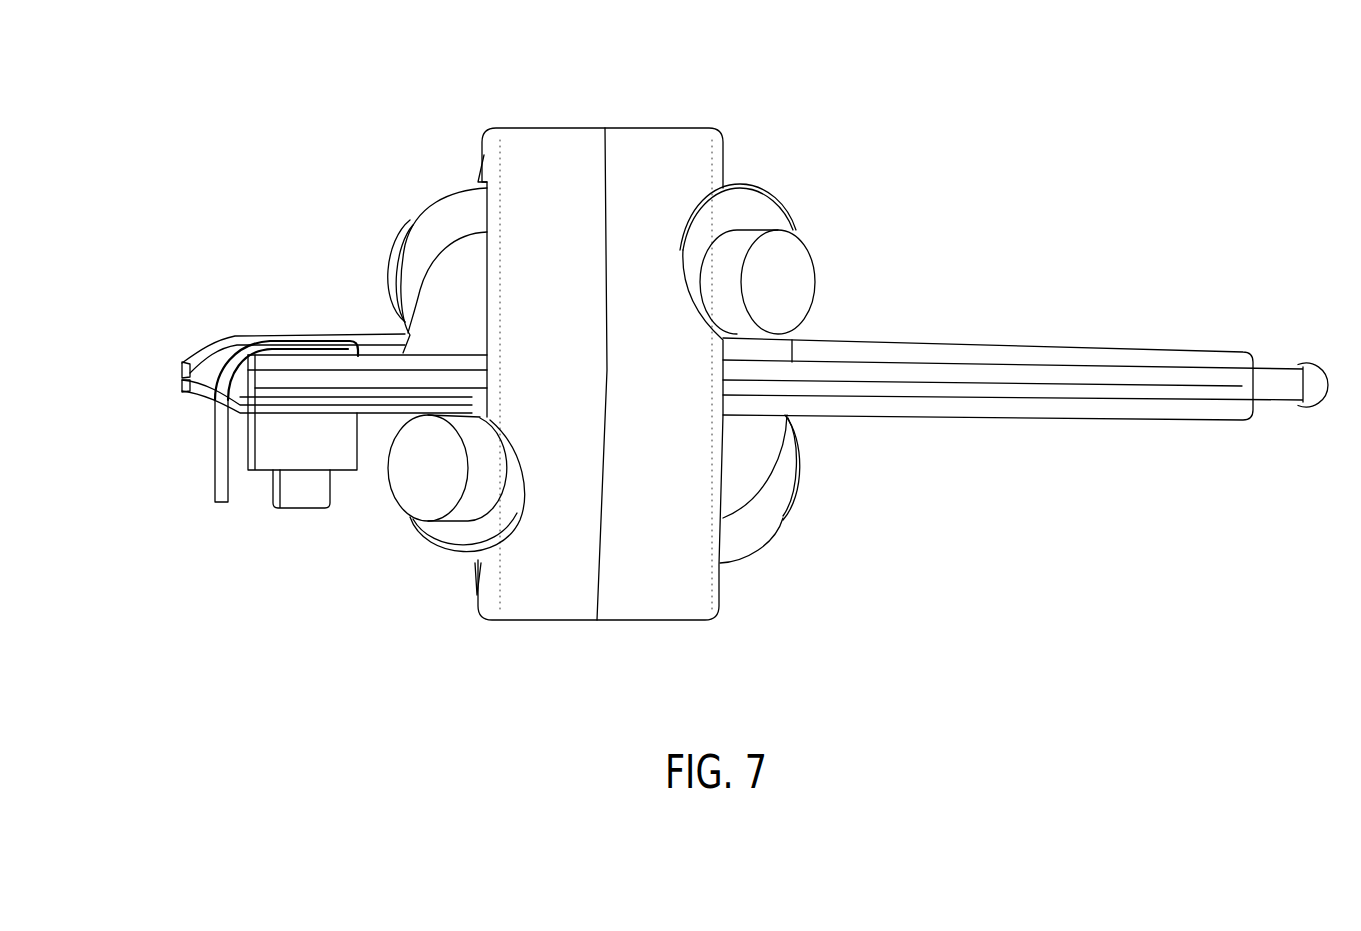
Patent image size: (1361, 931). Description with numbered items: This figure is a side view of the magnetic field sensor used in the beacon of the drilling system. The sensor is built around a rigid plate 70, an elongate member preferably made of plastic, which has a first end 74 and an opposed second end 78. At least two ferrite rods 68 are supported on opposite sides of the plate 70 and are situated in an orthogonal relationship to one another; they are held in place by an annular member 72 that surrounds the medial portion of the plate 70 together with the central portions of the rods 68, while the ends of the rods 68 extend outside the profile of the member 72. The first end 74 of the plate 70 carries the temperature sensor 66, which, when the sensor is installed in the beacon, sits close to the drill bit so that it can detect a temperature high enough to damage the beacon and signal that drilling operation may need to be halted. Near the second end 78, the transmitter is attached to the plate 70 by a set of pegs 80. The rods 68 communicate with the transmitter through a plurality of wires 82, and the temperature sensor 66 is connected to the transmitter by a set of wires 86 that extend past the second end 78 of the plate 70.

The temperature sensor 66 is at (1315, 397).
The ferrite rods 68 is at (748, 218).
The rigid plate 70 is at (913, 352).
The annular member 72 is at (640, 143).
The first end 74 is at (1257, 387).
The second end 78 is at (273, 362).
The pegs 80 is at (302, 493).
The wires 82 is at (207, 348).
The wires 86 is at (215, 457).